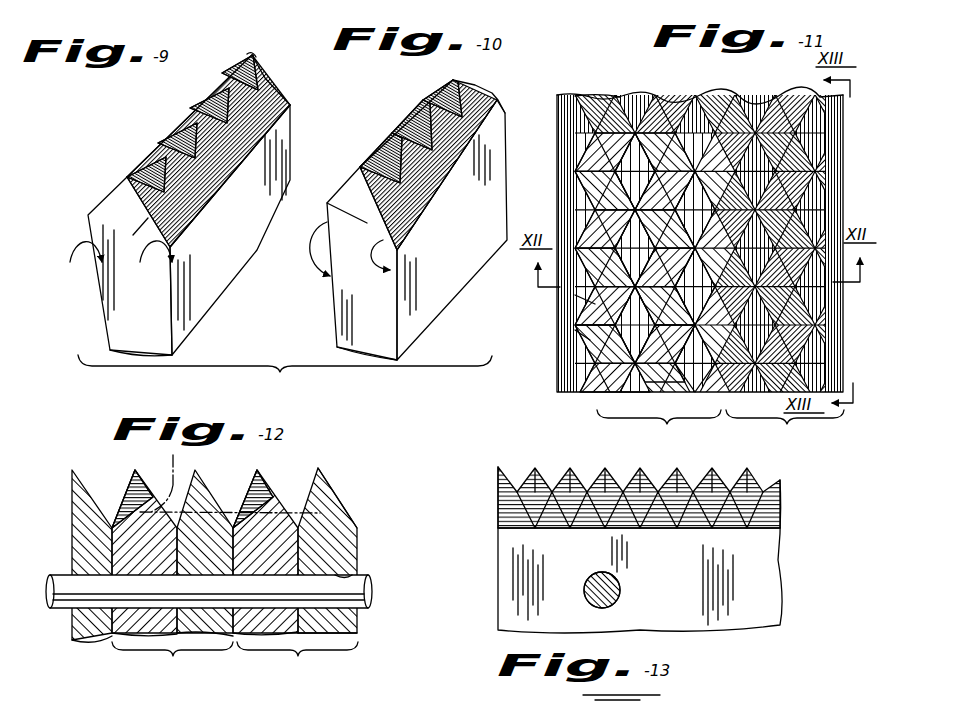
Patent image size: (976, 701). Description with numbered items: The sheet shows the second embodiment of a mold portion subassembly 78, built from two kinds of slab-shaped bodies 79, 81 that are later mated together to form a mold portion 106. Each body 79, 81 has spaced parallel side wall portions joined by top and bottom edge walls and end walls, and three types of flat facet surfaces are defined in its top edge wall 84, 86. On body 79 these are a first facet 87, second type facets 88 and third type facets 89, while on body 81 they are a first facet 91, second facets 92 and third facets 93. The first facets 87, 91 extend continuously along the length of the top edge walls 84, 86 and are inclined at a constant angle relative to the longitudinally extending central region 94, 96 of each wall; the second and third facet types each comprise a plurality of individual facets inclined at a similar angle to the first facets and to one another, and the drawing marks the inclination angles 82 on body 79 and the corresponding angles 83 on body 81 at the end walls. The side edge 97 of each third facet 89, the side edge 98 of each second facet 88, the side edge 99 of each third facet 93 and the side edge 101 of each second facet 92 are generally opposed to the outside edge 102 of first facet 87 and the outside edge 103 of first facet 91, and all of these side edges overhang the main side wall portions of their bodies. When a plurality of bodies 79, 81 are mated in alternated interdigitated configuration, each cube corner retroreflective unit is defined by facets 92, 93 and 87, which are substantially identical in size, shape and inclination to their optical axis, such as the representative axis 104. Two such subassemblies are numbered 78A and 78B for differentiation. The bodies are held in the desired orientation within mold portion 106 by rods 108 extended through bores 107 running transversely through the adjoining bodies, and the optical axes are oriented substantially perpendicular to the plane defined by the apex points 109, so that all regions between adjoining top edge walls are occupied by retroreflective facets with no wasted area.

In FIG. 9, the subassembly 78 is at (285, 375).
In FIG. 11, the subassembly 78A is at (639, 271).
In FIG. 12, the subassembly 78A is at (172, 578).
In FIG. 11, the subassembly 78B is at (785, 271).
In FIG. 12, the subassembly 78B is at (295, 577).
In FIG. 9, the slab-shaped body 79 is at (226, 248).
In FIG. 10, the slab-shaped body 81 is at (466, 242).
In FIG. 9, the tooth flank angle 82 is at (111, 264).
In FIG. 10, the tooth flank angle 83 is at (339, 258).
In FIG. 9, the top edge wall 84 is at (262, 82).
In FIG. 10, the top edge wall 86 is at (457, 63).
In FIG. 9, the first facet 87 is at (238, 97).
In FIG. 11, the first facet 87 is at (635, 248).
In FIG. 9, the second type facet 88 is at (246, 54).
In FIG. 11, the second type facet 88 is at (605, 229).
In FIG. 9, the third type facet 89 is at (222, 74).
In FIG. 11, the third type facet 89 is at (605, 267).
In FIG. 10, the first facet 91 is at (463, 100).
In FIG. 11, the first facet 91 is at (695, 281).
In FIG. 10, the second facet 92 is at (440, 93).
In FIG. 11, the second facet 92 is at (665, 267).
In FIG. 10, the third facet 93 is at (432, 108).
In FIG. 11, the third facet 93 is at (665, 260).
In FIG. 9, the central region 94 is at (246, 110).
In FIG. 10, the central region 96 is at (478, 150).
In FIG. 11, the side edge 97 is at (582, 336).
In FIG. 11, the side edge 98 is at (580, 306).
In FIG. 11, the side edge 99 is at (633, 390).
In FIG. 11, the side edge 101 is at (607, 377).
In FIG. 9, the outside edge 102 is at (226, 182).
In FIG. 10, the outside edge 103 is at (447, 187).
In FIG. 12, the optical axis 104 is at (173, 460).
In FIG. 11, the mold portion 106 is at (617, 90).
In FIG. 12, the mold portion 106 is at (342, 488).
In FIG. 13, the mold portion 106 is at (581, 465).
In FIG. 12, the bore 107 is at (343, 572).
In FIG. 13, the bore 107 is at (614, 578).
In FIG. 12, the rod 108 is at (372, 588).
In FIG. 13, the rod 108 is at (620, 596).
In FIG. 12, the apex point 109 is at (131, 499).